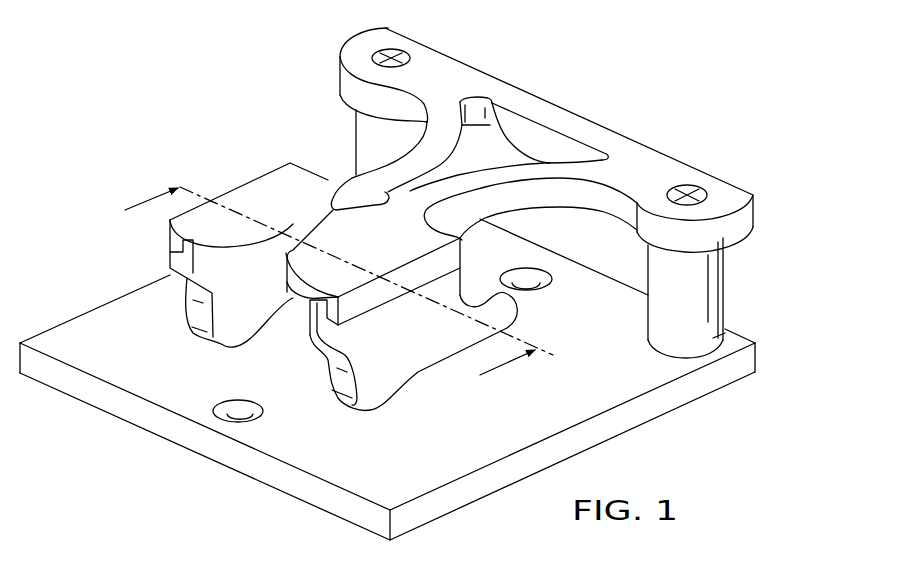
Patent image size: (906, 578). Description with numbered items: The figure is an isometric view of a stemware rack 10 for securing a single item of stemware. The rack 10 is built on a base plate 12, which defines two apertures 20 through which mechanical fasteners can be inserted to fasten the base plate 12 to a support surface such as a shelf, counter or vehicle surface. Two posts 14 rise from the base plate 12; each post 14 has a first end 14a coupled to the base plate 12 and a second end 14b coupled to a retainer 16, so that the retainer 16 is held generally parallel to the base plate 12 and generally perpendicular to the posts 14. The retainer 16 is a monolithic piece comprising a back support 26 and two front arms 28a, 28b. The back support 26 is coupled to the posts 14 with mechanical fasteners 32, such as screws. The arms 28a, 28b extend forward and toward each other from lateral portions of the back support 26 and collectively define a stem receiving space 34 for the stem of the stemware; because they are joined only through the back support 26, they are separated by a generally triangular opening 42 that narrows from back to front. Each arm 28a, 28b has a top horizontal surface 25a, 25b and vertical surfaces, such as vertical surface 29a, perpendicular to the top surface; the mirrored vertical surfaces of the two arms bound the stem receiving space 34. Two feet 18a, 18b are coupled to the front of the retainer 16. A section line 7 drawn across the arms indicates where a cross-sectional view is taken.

The stemware rack 10 is at (625, 54).
The base plate 12 is at (418, 471).
The posts 14 is at (354, 127).
The first end 14a is at (716, 338).
The second end 14b is at (715, 253).
The retainer 16 is at (660, 160).
The foot 18a is at (266, 309).
The foot 18b is at (410, 350).
The apertures 20 is at (226, 400).
The top horizontal surface 25a is at (242, 200).
The top horizontal surface 25b is at (318, 255).
The back support 26 is at (565, 120).
The front arm 28a is at (300, 211).
The front arm 28b is at (404, 254).
The vertical surface 29a is at (253, 250).
The mechanical fasteners 32 is at (378, 53).
The stem receiving space 34 is at (331, 203).
The generally triangular opening 42 is at (488, 148).
The section line 7- 7 is at (330, 290).